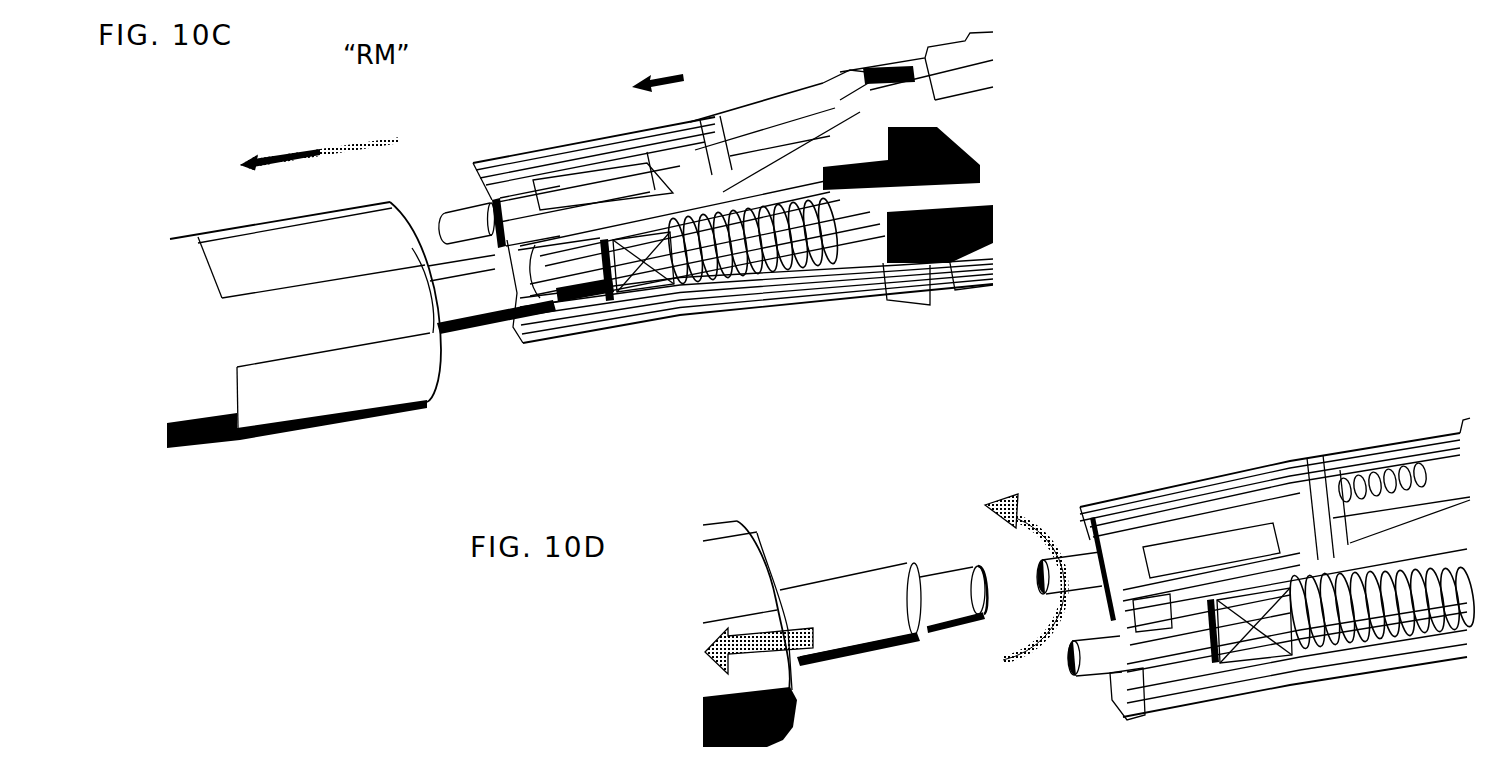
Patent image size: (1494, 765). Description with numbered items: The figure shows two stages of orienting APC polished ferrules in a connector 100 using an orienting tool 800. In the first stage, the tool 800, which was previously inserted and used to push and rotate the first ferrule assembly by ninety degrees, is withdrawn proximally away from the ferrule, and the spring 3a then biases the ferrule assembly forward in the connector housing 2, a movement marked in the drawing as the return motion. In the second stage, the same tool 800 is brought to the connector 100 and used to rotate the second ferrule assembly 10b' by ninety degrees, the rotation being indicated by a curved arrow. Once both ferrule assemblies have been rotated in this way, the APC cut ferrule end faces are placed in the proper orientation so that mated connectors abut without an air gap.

In FIG. 10C, the orienting tool 800 is at (215, 377).
In FIG. 10C, the connector housing 2 is at (620, 318).
In FIG. 10C, the spring 3a is at (793, 270).
In FIG. 10D, the second ferrule assembly 10b' is at (1093, 525).
In FIG. 10D, the connector 100 is at (1210, 468).